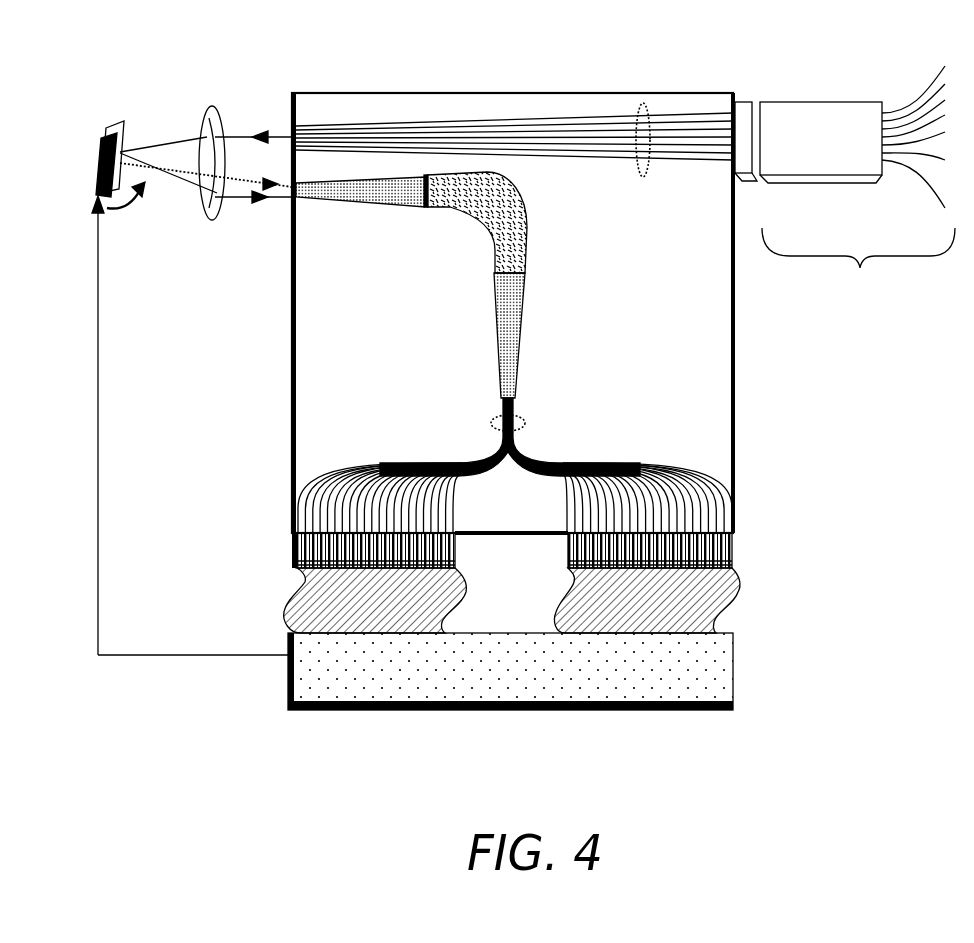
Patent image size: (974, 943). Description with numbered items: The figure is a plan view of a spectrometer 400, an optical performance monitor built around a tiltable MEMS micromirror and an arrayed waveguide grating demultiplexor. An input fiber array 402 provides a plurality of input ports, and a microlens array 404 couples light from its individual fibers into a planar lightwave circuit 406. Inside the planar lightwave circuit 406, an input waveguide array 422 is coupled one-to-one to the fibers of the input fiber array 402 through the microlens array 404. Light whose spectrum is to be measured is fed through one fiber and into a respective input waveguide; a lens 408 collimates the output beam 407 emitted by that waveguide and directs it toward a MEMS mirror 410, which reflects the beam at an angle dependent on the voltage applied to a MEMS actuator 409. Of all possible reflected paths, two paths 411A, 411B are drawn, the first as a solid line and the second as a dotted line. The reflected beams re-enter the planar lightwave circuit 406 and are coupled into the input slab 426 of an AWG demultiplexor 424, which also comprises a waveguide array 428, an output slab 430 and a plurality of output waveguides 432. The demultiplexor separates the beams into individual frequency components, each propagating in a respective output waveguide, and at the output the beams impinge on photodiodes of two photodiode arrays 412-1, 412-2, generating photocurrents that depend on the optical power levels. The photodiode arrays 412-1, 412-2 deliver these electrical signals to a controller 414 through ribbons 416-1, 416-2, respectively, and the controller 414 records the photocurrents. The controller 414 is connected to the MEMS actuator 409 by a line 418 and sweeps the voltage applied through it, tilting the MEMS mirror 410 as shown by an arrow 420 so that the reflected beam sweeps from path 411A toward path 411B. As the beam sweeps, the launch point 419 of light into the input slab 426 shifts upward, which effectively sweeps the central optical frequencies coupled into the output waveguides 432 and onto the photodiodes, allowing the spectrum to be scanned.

The spectrometer 400 is at (808, 412).
The input fiber array 402 is at (625, 183).
The microlens array 404 is at (748, 100).
The planar lightwave circuit 406 is at (516, 93).
The output beam 407 is at (250, 134).
The lens 408 is at (208, 106).
The MEMS actuator 409 is at (99, 175).
The MEMS mirror 410 is at (126, 135).
The first beam path 411A is at (148, 183).
The second beam path 411B is at (184, 183).
The first photodiode array 412-1 is at (292, 552).
The second photodiode array 412-2 is at (737, 556).
The controller 414 is at (735, 667).
The first ribbon 416-1 is at (300, 598).
The second ribbon 416-2 is at (737, 602).
The line 418 is at (98, 408).
The launch point 419 is at (292, 200).
The arrow 420 is at (108, 210).
The input waveguide array 422 is at (645, 178).
The AWG demultiplexor 424 is at (603, 332).
The input slab 426 is at (318, 200).
The waveguide array 428 is at (486, 242).
The output slab 430 is at (498, 358).
The output waveguides 432 is at (526, 424).